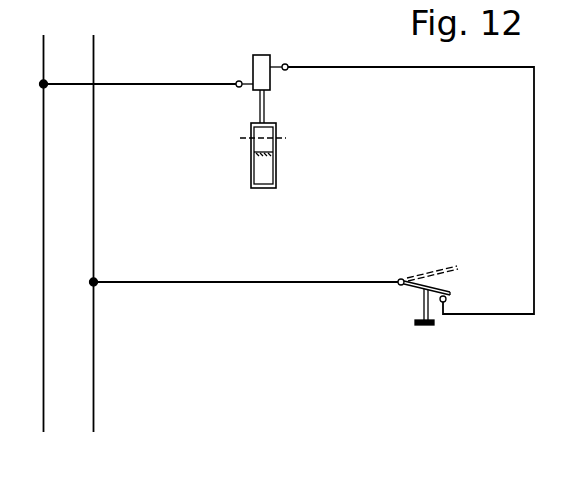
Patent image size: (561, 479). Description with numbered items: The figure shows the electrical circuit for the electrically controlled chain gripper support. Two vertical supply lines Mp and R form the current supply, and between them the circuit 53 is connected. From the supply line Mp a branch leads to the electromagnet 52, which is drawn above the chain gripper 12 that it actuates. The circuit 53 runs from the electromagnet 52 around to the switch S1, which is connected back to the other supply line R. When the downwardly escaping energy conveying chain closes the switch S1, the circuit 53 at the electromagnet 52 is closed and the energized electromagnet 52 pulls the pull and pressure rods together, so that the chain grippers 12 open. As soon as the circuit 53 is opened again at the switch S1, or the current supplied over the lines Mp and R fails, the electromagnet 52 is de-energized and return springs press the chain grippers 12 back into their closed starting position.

The neutral/ground supply line Mp is at (48, 248).
The phase supply line R is at (95, 248).
The electromagnet 52 is at (266, 55).
The circuit 53 is at (411, 67).
The chain gripper 12 is at (272, 160).
The switch S1 is at (424, 283).